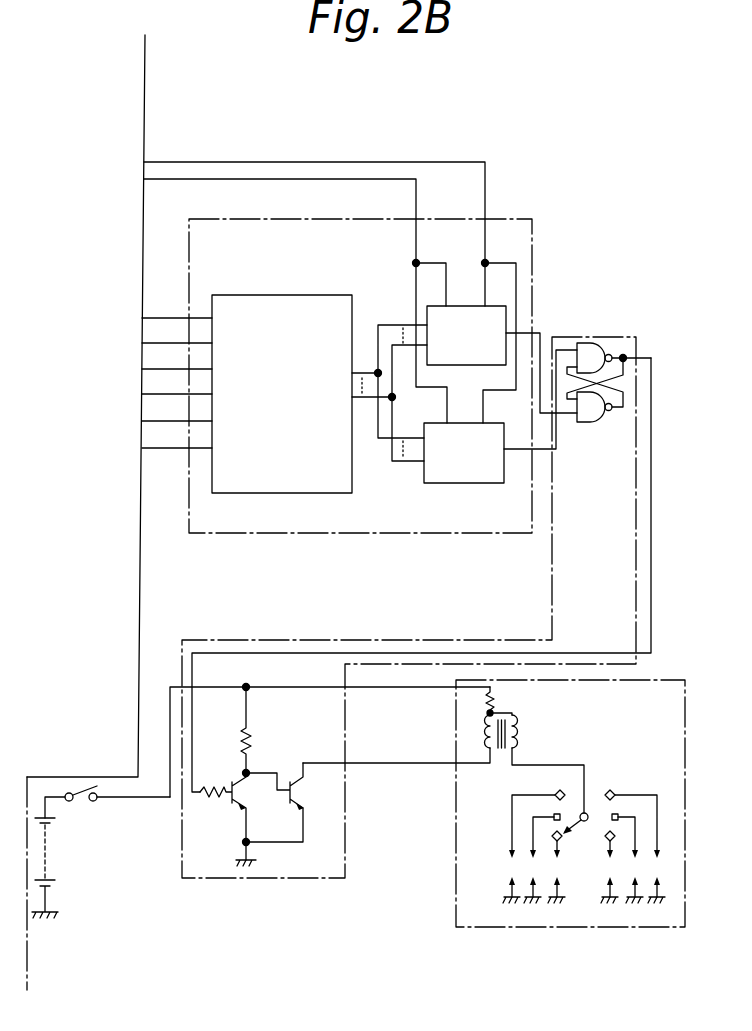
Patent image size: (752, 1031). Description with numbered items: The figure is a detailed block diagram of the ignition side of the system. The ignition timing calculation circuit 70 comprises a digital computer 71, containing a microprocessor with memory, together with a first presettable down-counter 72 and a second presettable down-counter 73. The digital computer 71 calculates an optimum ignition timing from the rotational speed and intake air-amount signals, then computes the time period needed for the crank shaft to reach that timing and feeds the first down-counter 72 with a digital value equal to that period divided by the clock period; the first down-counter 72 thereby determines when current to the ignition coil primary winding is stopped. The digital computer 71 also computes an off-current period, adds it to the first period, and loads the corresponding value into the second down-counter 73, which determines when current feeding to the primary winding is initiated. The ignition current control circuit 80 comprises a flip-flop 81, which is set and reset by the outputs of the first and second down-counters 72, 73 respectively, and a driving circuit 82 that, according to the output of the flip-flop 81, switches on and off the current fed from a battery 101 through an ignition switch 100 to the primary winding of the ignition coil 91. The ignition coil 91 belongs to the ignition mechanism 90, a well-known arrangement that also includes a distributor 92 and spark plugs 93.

The ignition timing calculation circuit 70 is at (368, 533).
The digital computer 71 is at (285, 294).
The first presettable down-counter 72 is at (462, 365).
The second presettable down-counter 73 is at (470, 483).
The ignition current control circuit 80 is at (303, 878).
The flip-flop 81 is at (585, 425).
The driving circuit 82 is at (292, 752).
The ignition mechanism 90 is at (456, 911).
The ignition coil 91 is at (518, 715).
The distributor 92 is at (603, 782).
The spark plugs 93 is at (503, 870).
The ignition switch 100 is at (83, 802).
The battery 101 is at (47, 853).